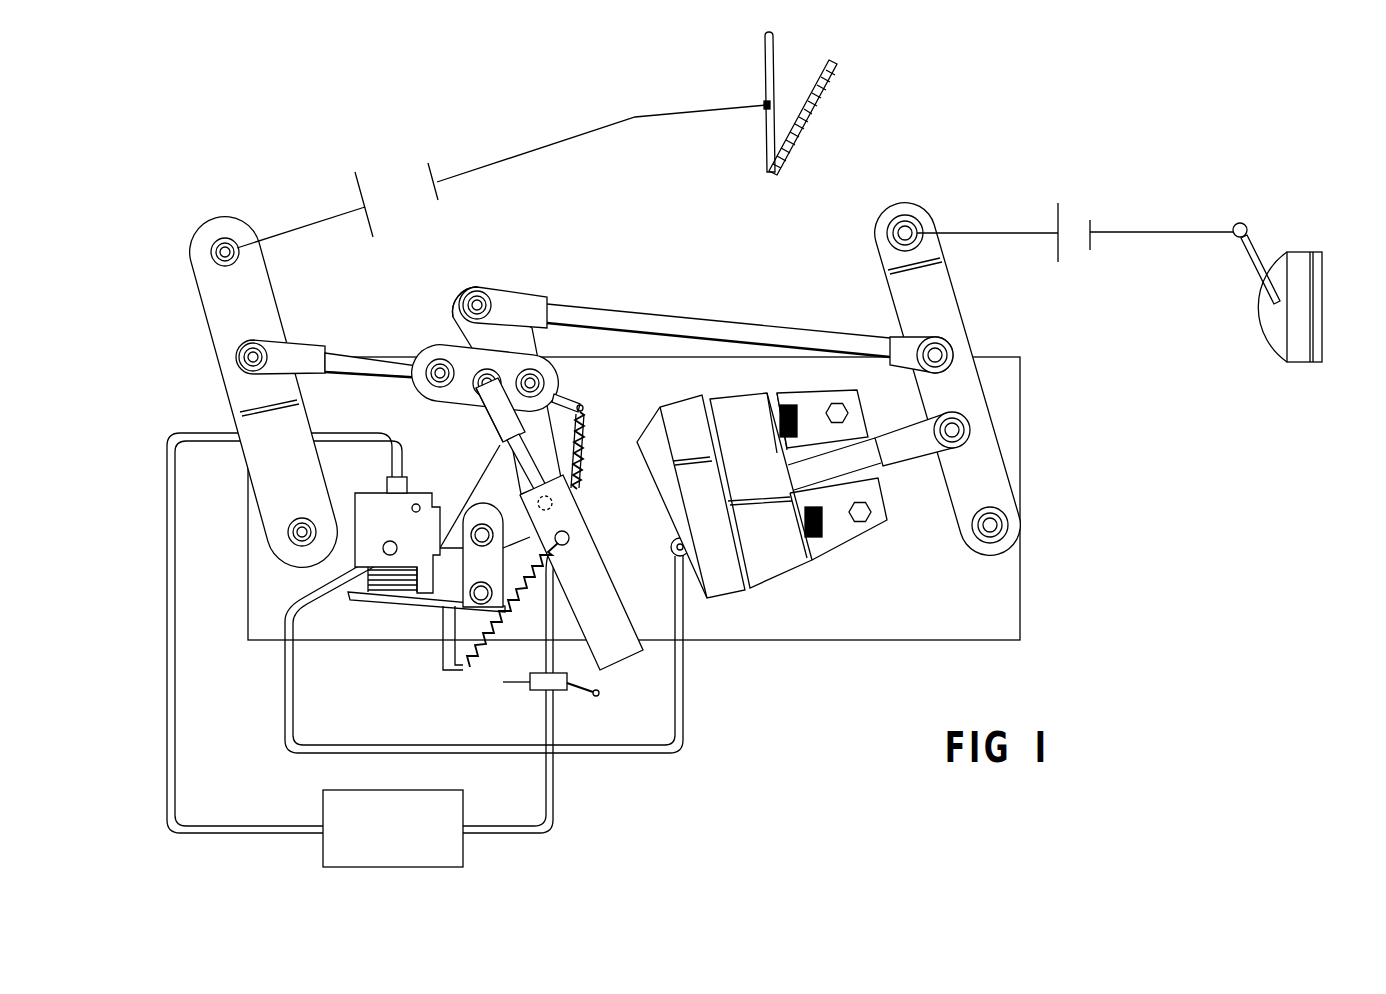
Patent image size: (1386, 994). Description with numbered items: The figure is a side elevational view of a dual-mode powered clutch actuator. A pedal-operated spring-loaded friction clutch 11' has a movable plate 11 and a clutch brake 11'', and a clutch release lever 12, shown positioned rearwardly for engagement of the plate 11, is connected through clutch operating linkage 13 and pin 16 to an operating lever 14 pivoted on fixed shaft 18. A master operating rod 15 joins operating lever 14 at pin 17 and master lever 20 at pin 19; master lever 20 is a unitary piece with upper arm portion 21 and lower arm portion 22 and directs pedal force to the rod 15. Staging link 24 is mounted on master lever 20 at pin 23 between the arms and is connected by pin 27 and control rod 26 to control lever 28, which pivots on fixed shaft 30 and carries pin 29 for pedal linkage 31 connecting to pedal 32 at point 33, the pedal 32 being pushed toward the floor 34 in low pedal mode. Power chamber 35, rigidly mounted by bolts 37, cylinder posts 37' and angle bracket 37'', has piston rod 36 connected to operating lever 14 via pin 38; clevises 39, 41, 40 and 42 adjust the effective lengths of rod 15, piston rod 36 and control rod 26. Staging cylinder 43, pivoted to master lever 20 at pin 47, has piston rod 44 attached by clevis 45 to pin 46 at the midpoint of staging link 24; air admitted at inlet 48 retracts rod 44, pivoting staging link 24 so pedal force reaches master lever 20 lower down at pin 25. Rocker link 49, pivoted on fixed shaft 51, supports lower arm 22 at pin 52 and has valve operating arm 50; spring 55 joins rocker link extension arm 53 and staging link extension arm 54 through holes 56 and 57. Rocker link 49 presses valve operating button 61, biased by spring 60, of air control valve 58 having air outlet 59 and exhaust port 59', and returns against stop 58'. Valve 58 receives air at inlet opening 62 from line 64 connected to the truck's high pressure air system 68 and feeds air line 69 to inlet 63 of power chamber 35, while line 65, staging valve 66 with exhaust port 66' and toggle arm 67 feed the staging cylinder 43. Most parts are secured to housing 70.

The movable plate 11 is at (1298, 324).
The pedal-operated spring-loaded friction clutch 11' is at (1250, 307).
The clutch brake 11'' is at (1340, 307).
The clutch release lever 12 is at (1250, 243).
The clutch operating linkage 13 is at (1140, 228).
The operating lever 14 is at (950, 290).
The master operating rod 15 is at (640, 316).
The pin 16 is at (918, 222).
The pin 17 is at (955, 345).
The fixed shaft 18 is at (982, 540).
The pin 19 is at (483, 294).
The master lever 20 is at (452, 313).
The upper arm portion 21 is at (535, 338).
The lower arm portion 22 is at (500, 460).
The pin 23 is at (548, 380).
The staging link 24 is at (424, 352).
The pin 25 is at (426, 384).
The control rod 26 is at (345, 354).
The pin 27 is at (238, 364).
The control lever 28 is at (200, 296).
The pin 29 is at (236, 243).
The fixed shaft 30 is at (293, 545).
The pedal linkage 31 is at (522, 155).
The pedal 32 is at (776, 55).
The point 33 is at (764, 103).
The floor 34 is at (805, 128).
The power chamber 35 is at (775, 572).
The piston rod 36 is at (834, 464).
The bolts 37 is at (869, 447).
The cylinder posts 37' is at (812, 477).
The angle bracket 37'' is at (842, 525).
The pin 38 is at (947, 462).
The clevis 39 is at (893, 340).
The clevis 40 is at (908, 434).
The clevis 41 is at (530, 297).
The clevis 42 is at (292, 348).
The staging cylinder 43 is at (630, 612).
The piston rod 44 is at (518, 432).
The clevis 45 is at (496, 425).
The pin 46 is at (480, 396).
The pin 47 is at (555, 505).
The inlet 48 is at (570, 540).
The rocker link 49 is at (477, 573).
The valve operating arm 50 is at (415, 606).
The fixed shaft 51 is at (480, 604).
The pin 52 is at (482, 524).
The rocker link extension arm 53 is at (441, 660).
The staging link extension arm 54 is at (575, 400).
The spring 55 is at (588, 458).
The hole 56 is at (464, 670).
The hole 57 is at (586, 412).
The air control valve 58 is at (381, 537).
The stop 58' is at (468, 496).
The air outlet 59 is at (386, 530).
The exhaust port 59' is at (431, 485).
The spring 60 is at (400, 568).
The valve operating button 61 is at (383, 598).
The inlet opening 62 is at (385, 484).
The inlet 63 is at (690, 545).
The line 64 is at (335, 438).
The line 65 is at (546, 652).
The staging valve 66 is at (559, 699).
The port 66' is at (503, 700).
The toggle arm 67 is at (600, 693).
The high pressure air system 68 is at (450, 797).
The air line 69 is at (287, 708).
The housing 70 is at (905, 648).